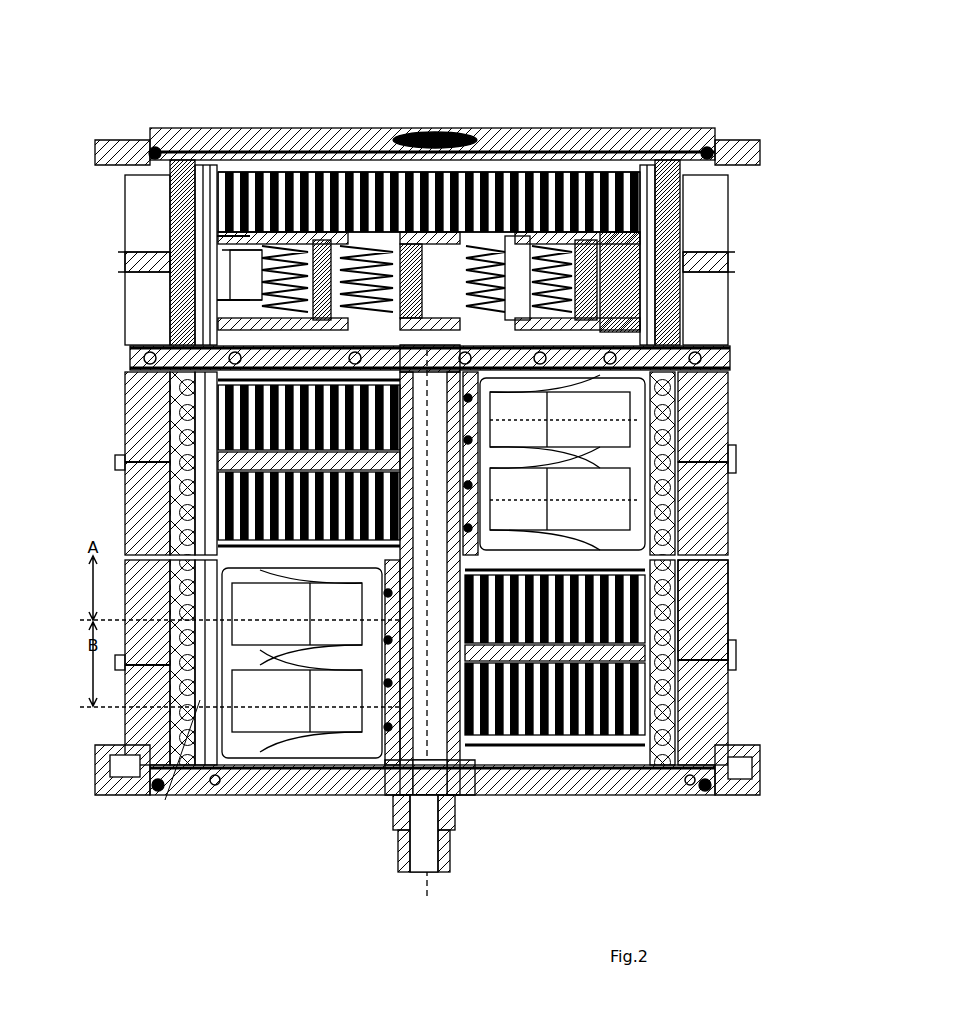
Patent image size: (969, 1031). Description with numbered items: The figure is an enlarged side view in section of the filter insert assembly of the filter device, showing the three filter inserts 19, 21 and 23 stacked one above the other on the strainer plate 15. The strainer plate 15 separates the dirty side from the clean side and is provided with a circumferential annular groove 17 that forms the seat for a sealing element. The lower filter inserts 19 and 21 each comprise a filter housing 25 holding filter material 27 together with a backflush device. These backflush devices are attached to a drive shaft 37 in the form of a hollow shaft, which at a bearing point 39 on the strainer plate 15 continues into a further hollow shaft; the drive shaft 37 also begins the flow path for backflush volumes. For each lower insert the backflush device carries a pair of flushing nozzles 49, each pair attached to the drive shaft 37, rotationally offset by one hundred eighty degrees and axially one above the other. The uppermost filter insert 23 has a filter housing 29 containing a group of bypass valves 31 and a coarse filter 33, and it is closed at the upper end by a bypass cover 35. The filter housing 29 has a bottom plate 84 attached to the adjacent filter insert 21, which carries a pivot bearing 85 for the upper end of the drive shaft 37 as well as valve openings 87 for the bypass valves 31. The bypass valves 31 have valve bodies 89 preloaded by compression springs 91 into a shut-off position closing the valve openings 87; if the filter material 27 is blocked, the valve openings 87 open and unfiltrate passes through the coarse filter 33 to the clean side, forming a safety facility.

The strainer plate 15 is at (668, 785).
The circumferential annular groove 17 is at (755, 755).
The filter insert 19 is at (730, 620).
The filter insert 21 is at (730, 405).
The uppermost filter insert 23 is at (730, 212).
The filter housing 25 is at (705, 500).
The filter material 27 is at (128, 492).
The filter housing 29 is at (690, 335).
The bypass valves 31 is at (333, 172).
The coarse filter 33 is at (125, 270).
The bypass cover 35 is at (175, 130).
The drive shaft 37 is at (395, 795).
The bearing point 39 is at (460, 795).
The flushing nozzles 49 is at (730, 385).
The bottom plate 84 is at (720, 375).
The pivot bearing 85 is at (482, 393).
The valve openings 87 is at (128, 425).
The valve bodies 89 is at (172, 310).
The compression springs 91 is at (262, 150).